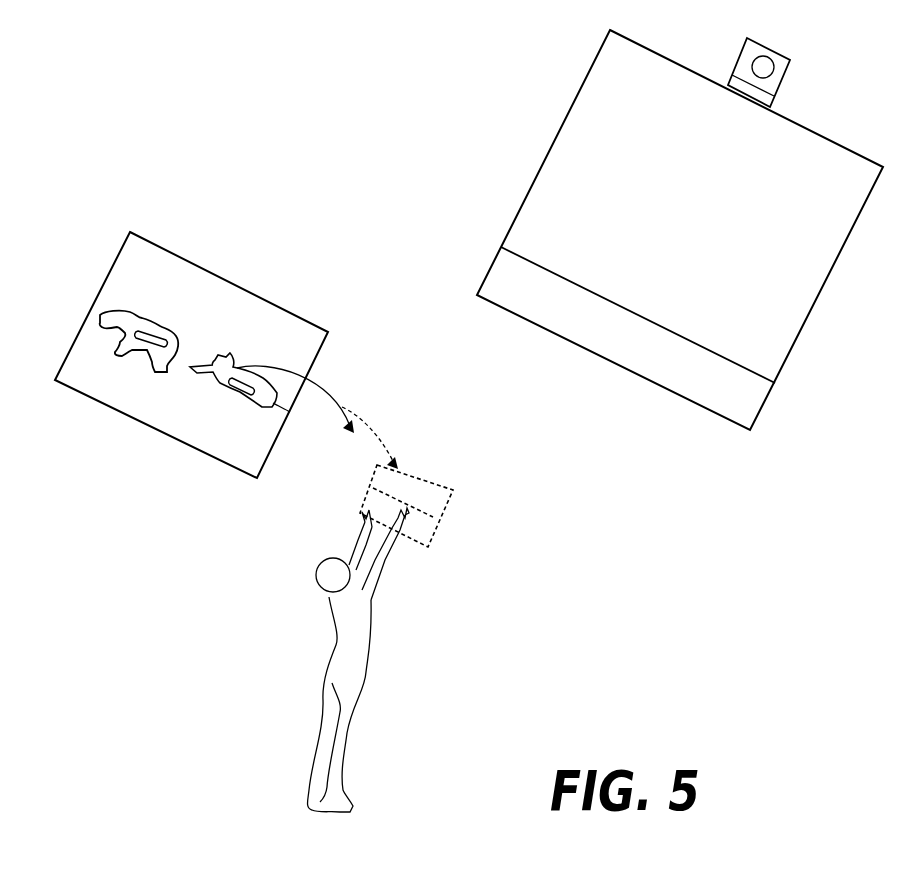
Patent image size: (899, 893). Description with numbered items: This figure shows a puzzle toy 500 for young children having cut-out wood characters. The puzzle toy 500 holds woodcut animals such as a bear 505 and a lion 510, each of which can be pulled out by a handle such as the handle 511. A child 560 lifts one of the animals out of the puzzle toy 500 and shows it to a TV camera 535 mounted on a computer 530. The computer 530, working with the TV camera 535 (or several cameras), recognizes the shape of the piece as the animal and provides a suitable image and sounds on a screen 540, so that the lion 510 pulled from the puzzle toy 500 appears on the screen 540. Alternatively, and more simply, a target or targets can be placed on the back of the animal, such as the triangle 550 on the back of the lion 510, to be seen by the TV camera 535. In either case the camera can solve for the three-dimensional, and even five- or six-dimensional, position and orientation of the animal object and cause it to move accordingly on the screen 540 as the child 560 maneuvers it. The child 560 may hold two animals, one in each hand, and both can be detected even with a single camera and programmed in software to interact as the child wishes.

The puzzle toy 500 is at (158, 239).
The bear 505 is at (100, 330).
The handle 511 is at (150, 342).
The lion 510 is at (210, 355).
The triangle 550 is at (235, 360).
The user 560 is at (373, 643).
The screen 540 is at (564, 122).
The computer 530 is at (640, 368).
The TV camera 535 is at (792, 68).